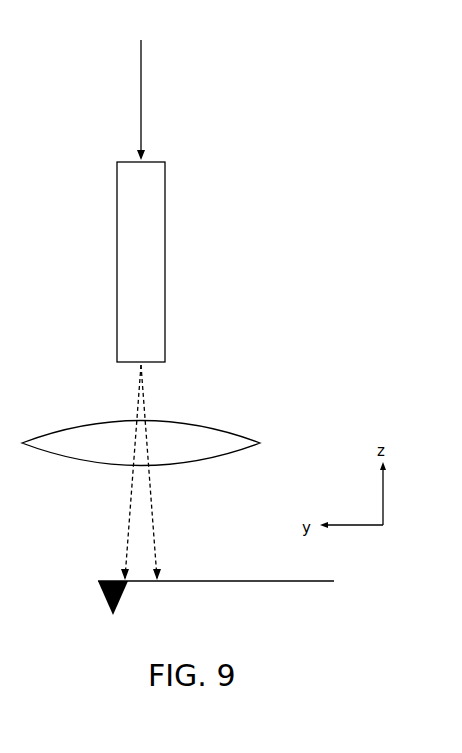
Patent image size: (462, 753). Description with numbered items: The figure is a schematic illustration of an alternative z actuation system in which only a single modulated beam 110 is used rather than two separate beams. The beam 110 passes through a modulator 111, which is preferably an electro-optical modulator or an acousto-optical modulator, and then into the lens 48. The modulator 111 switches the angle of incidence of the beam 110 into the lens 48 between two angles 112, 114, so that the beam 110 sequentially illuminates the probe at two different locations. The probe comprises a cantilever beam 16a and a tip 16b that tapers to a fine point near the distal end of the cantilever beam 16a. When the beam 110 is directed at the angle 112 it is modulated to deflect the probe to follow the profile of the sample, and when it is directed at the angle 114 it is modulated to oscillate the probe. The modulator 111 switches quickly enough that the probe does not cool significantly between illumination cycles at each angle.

The modulated beam 110 is at (157, 92).
The modulator 111 is at (155, 262).
The lens 48 is at (262, 443).
The first angle 112 is at (125, 540).
The second angle 114 is at (160, 540).
The cantilever beam 16a is at (157, 583).
The tip 16b is at (100, 600).